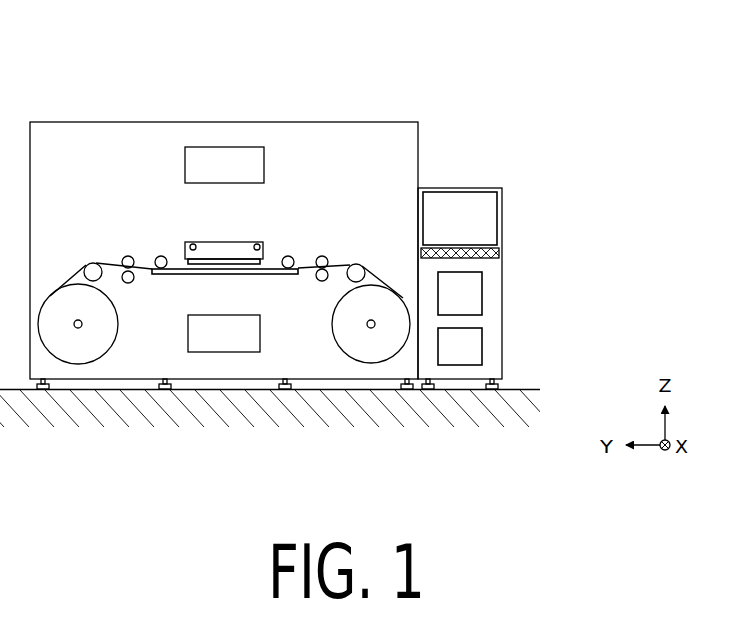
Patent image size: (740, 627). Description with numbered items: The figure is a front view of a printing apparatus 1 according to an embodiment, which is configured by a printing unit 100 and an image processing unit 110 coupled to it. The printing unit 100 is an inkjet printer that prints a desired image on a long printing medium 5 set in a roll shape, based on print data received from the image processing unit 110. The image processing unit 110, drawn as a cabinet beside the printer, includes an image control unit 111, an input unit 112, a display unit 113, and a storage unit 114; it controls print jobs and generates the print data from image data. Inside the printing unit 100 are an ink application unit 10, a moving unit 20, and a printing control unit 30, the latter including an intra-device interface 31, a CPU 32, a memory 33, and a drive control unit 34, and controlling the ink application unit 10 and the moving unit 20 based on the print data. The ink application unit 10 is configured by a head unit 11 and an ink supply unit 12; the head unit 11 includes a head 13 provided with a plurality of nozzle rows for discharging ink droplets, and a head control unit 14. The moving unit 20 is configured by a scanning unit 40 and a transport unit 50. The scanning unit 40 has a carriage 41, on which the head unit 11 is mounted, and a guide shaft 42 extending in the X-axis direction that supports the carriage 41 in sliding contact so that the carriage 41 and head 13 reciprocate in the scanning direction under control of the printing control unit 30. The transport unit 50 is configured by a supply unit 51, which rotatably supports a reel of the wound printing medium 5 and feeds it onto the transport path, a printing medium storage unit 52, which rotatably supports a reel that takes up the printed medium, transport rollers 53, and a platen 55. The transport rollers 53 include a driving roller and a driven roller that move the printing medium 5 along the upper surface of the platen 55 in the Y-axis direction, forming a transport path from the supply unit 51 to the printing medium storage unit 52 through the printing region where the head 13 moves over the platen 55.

The printing apparatus 1 is at (462, 53).
The printing unit 100 is at (62, 96).
The moving unit 20 is at (147, 141).
The scanning unit 40 is at (157, 187).
The transport unit 50 is at (110, 207).
The transport rollers 53 is at (160, 256).
The guide shaft 42 is at (189, 245).
The carriage 41 is at (220, 250).
The head unit 11 is at (231, 260).
The head 13 is at (224, 261).
The head control unit 14 is at (224, 261).
The ink application unit 10 is at (281, 247).
The printing medium 5 is at (340, 266).
The printing control unit 30 is at (264, 156).
The intra-device interface 31 is at (224, 165).
The CPU 32 is at (224, 165).
The memory 33 is at (224, 165).
The drive control unit 34 is at (224, 165).
The platen 55 is at (232, 276).
The ink supply unit 12 is at (188, 327).
The printing medium storage unit 52 is at (122, 343).
The supply unit 51 is at (327, 338).
The image processing unit 110 is at (468, 175).
The display unit 113 is at (488, 217).
The input unit 112 is at (497, 252).
The image control unit 111 is at (473, 295).
The storage unit 114 is at (473, 347).